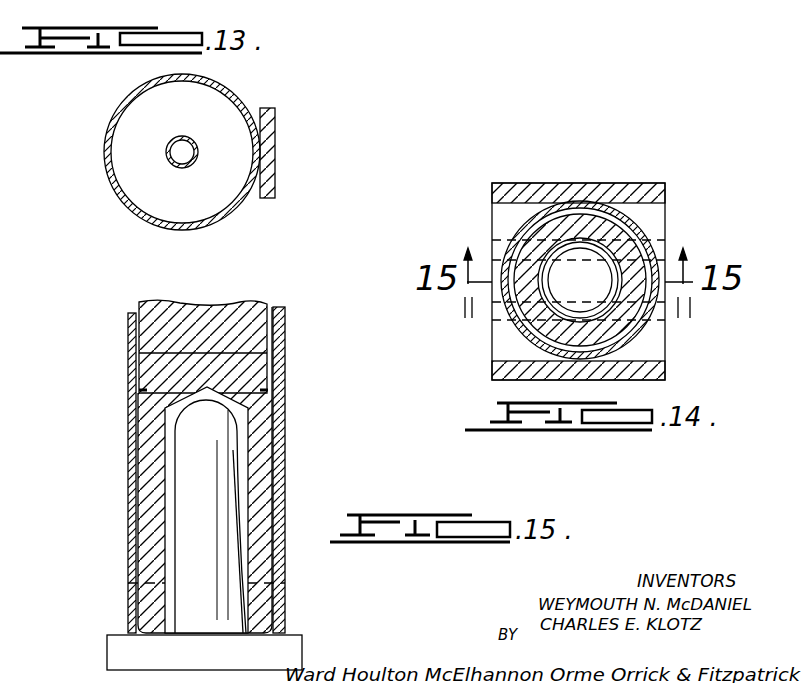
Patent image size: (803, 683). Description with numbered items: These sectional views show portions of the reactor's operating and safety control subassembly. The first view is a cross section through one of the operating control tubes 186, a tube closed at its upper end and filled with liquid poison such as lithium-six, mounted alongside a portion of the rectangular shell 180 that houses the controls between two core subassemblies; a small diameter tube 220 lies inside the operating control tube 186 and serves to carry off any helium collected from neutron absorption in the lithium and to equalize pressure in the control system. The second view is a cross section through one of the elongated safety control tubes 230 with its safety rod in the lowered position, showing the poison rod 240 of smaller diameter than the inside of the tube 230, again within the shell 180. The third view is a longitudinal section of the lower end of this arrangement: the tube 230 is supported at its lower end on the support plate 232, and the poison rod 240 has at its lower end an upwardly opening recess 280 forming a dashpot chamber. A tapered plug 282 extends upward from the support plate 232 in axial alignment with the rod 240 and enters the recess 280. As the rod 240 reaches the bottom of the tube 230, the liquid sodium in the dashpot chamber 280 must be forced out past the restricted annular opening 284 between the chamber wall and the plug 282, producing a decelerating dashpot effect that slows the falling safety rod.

In FIG. 13, the rectangular shell 180 is at (268, 133).
In FIG. 14, the rectangular shell 180 is at (525, 152).
In FIG. 13, the operating control tube 186 is at (104, 148).
In FIG. 13, the small diameter tube 220 is at (185, 135).
In FIG. 14, the elongated tube 230 is at (628, 217).
In FIG. 15, the elongated tube 230 is at (287, 340).
In FIG. 14, the support plate 232 is at (500, 330).
In FIG. 15, the support plate 232 is at (280, 658).
In FIG. 14, the poison rod 240 is at (572, 220).
In FIG. 15, the poison rod 240 is at (223, 297).
In FIG. 15, the recess 280 is at (243, 445).
In FIG. 15, the tapered plug 282 is at (230, 497).
In FIG. 14, the restricted annular opening 284 is at (613, 258).
In FIG. 15, the restricted annular opening 284 is at (247, 568).